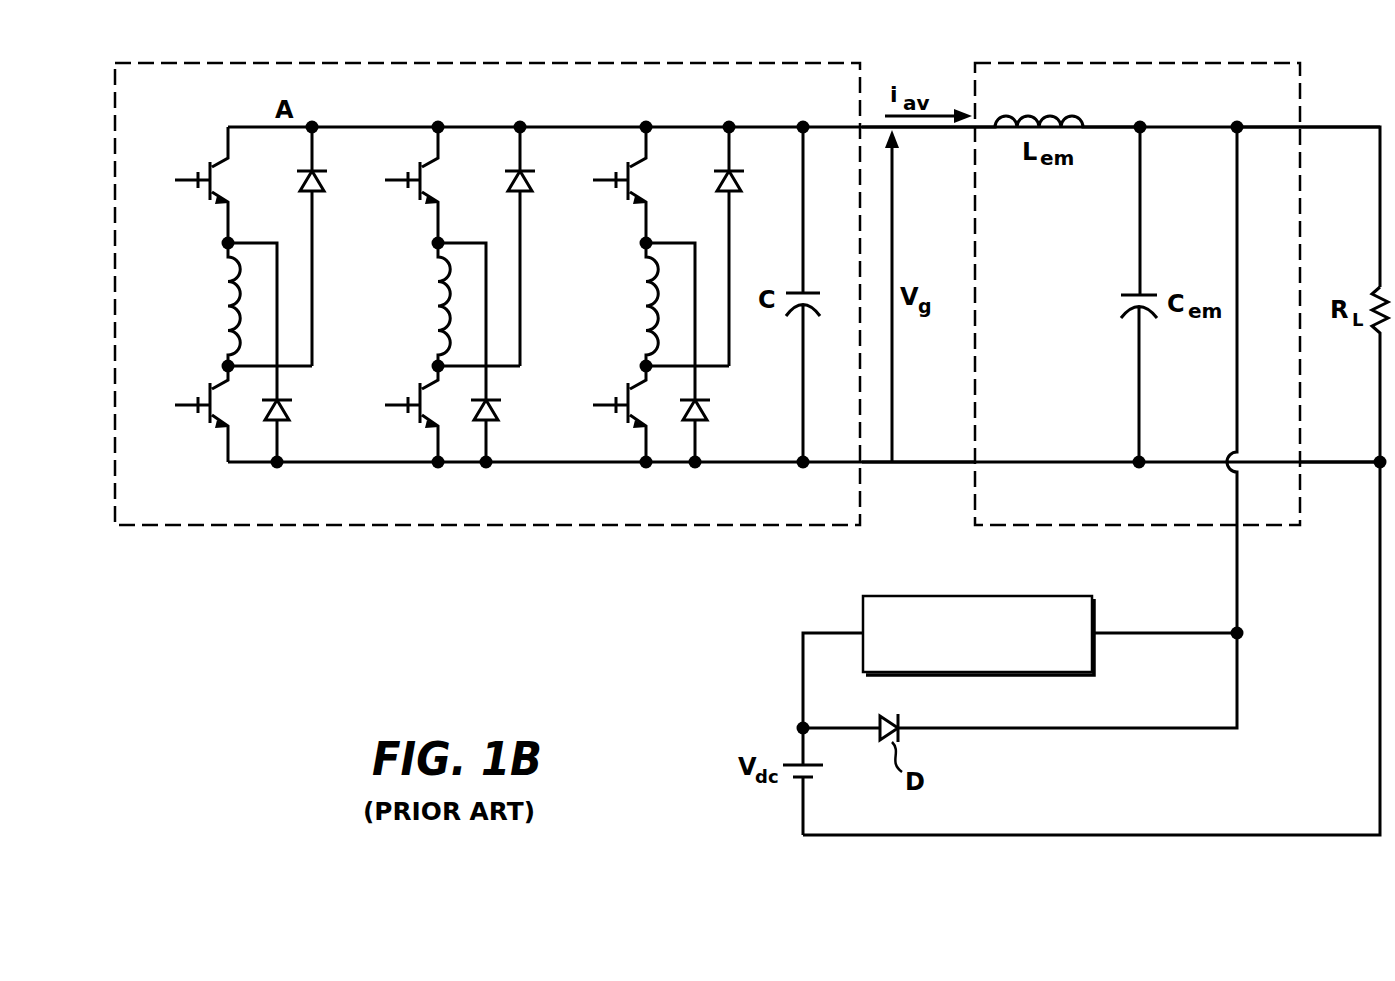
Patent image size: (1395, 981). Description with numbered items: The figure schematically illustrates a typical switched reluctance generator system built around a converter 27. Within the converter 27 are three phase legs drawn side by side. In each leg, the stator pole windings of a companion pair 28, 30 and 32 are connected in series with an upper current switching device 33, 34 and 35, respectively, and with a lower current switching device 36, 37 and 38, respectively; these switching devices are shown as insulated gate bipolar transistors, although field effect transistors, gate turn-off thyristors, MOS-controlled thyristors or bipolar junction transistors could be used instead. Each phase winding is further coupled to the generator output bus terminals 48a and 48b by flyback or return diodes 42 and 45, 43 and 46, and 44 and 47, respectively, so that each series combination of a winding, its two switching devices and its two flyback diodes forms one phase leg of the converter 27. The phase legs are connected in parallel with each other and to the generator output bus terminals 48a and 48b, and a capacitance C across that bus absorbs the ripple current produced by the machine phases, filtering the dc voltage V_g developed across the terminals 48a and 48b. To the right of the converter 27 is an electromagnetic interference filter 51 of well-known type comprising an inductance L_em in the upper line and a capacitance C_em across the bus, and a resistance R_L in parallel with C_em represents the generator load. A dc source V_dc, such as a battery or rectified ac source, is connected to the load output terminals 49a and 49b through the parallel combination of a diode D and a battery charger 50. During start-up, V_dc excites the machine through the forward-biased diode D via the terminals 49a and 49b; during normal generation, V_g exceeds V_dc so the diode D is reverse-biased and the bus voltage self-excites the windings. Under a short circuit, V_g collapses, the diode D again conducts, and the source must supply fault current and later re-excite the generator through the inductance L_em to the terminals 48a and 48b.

The converter 27 is at (553, 62).
The electromagnetic interference filter 51 is at (1133, 62).
The stator pole windings of first companion pair 28 is at (228, 306).
The stator pole windings of second companion pair 30 is at (438, 306).
The stator pole windings of third companion pair 32 is at (646, 306).
The upper current switching device 33 is at (208, 168).
The upper current switching device 34 is at (418, 168).
The upper current switching device 35 is at (626, 168).
The lower current switching device 36 is at (208, 388).
The lower current switching device 37 is at (418, 388).
The lower current switching device 38 is at (626, 388).
The flyback diode 42 is at (323, 190).
The flyback diode 43 is at (531, 190).
The flyback diode 44 is at (740, 190).
The flyback diode 45 is at (290, 412).
The flyback diode 46 is at (499, 412).
The flyback diode 47 is at (708, 412).
The generator output bus terminal 48a is at (935, 133).
The generator output bus terminal 48b is at (925, 460).
The load output terminal 49a is at (1330, 127).
The load output terminal 49b is at (1326, 460).
The battery charger 50 is at (1073, 672).